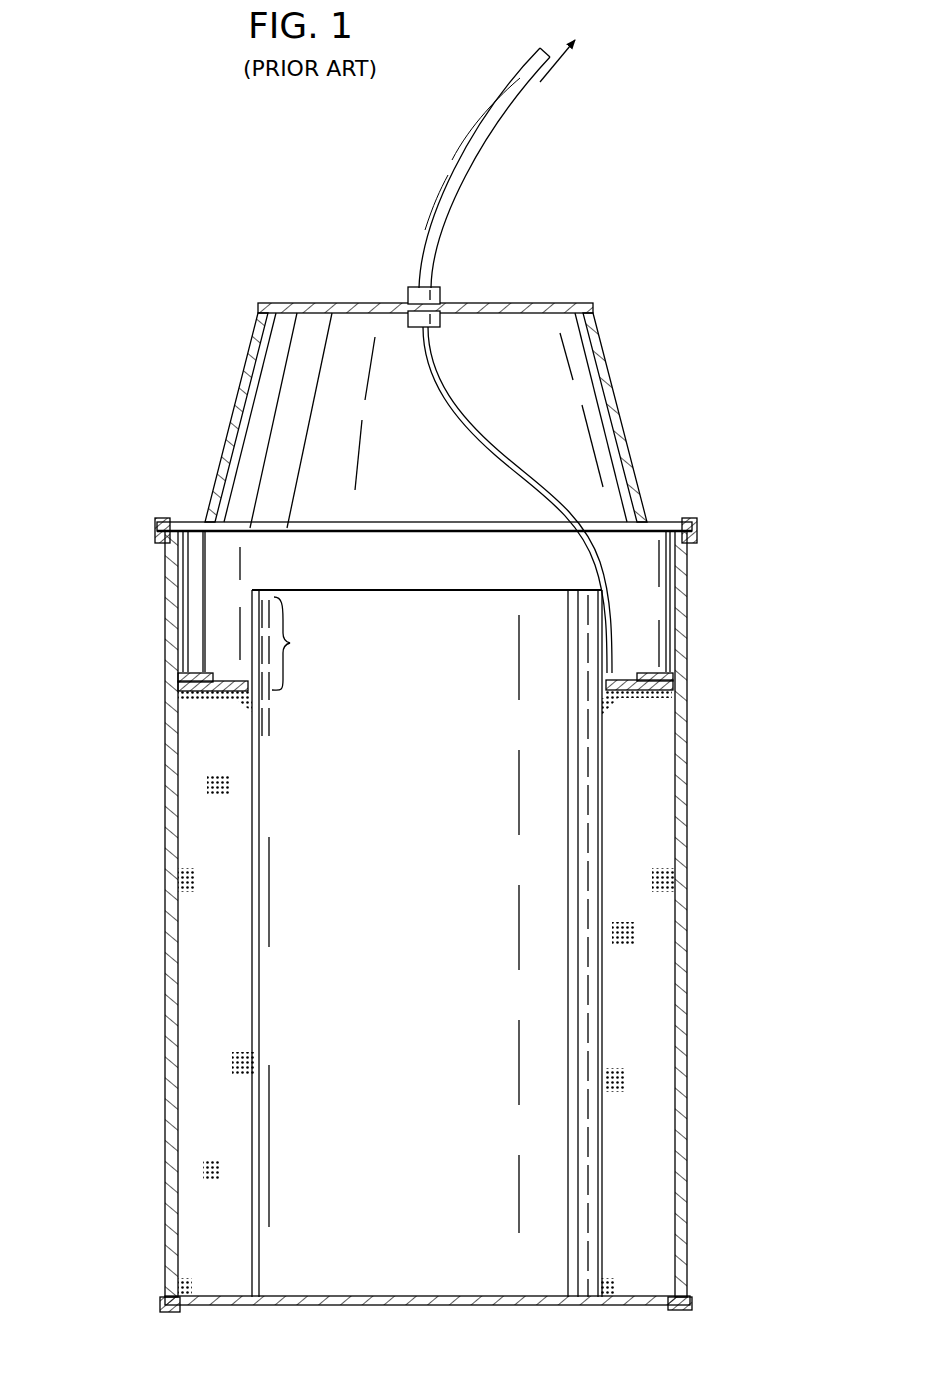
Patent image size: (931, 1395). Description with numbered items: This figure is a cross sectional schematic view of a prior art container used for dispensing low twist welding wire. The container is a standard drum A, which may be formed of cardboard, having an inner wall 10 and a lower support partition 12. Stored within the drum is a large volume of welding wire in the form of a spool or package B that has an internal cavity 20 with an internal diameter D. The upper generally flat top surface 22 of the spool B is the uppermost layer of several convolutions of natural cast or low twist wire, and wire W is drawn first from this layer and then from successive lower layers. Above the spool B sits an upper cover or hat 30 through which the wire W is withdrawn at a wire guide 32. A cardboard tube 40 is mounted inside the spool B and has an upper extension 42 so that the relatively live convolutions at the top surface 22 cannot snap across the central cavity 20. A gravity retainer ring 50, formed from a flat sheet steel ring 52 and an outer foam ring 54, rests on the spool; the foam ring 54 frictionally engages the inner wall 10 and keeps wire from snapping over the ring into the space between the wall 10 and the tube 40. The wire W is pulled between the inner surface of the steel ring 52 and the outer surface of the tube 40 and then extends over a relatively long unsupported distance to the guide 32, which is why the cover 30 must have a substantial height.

The inner wall 10 is at (186, 600).
The lower support partition 12 is at (432, 1304).
The internal cavity 20 is at (260, 1064).
The upper generally flat top surface 22 is at (675, 681).
The upper cover 30 is at (620, 405).
The wire guide 32 is at (441, 296).
The cardboard tube 40 is at (388, 605).
The upper extension 42 is at (298, 643).
The gravity retainer ring 50 is at (628, 672).
The flat sheet steel ring 52 is at (210, 697).
The outer foam ring 54 is at (193, 673).
The drum A is at (163, 800).
The wire spool B is at (650, 776).
The internal diameter D is at (598, 970).
The wire W is at (496, 460).